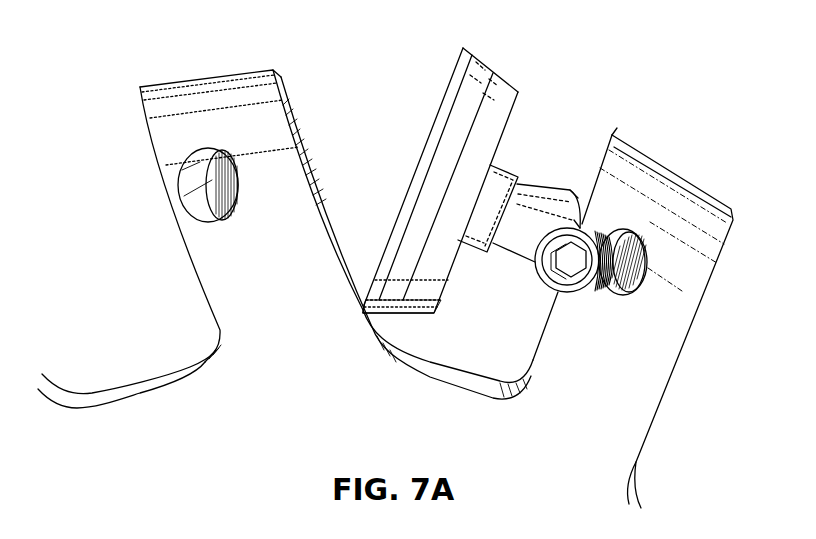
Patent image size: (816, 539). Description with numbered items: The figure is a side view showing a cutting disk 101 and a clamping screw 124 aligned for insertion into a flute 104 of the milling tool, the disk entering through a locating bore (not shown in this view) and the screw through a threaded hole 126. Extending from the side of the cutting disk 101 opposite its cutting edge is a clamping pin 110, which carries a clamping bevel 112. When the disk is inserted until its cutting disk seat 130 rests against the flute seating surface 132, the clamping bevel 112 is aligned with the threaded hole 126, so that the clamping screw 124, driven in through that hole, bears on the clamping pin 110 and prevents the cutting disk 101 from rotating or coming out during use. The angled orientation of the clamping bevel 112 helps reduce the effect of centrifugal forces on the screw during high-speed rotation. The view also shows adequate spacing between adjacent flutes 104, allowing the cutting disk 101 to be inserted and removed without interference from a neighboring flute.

The cutting disk 101 is at (486, 63).
The flute 104 is at (206, 78).
The clamping pin 110 is at (570, 186).
The clamping bevel 112 is at (536, 188).
The clamping screw 124 is at (548, 290).
The threaded hole 126 is at (641, 278).
The cutting disk seat 130 is at (441, 302).
The flute seating surface 132 is at (610, 134).